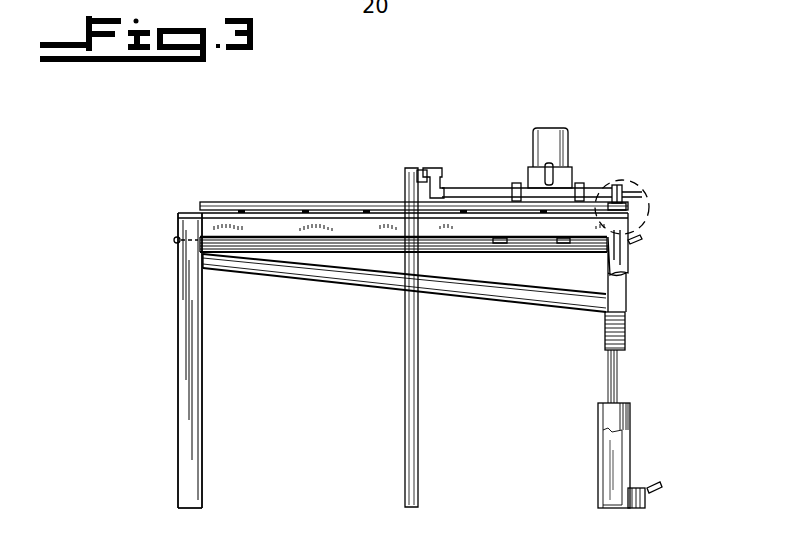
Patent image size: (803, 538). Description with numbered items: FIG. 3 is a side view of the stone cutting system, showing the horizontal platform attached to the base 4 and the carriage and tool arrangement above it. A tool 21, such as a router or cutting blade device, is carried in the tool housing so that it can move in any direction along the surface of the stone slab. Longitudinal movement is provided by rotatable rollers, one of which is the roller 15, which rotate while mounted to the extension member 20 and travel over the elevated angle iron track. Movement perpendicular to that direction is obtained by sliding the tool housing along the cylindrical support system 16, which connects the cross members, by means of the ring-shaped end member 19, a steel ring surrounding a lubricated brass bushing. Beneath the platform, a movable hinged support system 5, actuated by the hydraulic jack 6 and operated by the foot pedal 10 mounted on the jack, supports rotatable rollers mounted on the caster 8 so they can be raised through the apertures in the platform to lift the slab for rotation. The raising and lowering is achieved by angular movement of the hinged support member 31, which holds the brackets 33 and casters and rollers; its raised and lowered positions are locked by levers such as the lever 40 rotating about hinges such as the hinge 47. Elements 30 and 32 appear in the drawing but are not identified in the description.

The base 4 is at (187, 232).
The movable hinged support system 5 is at (622, 323).
The hydraulic jack 6 is at (632, 420).
The caster 8 is at (643, 217).
The foot pedal 10 is at (655, 490).
The rotatable roller 15 is at (430, 170).
The cylindrical support system 16 is at (595, 187).
The ring-shaped end member 19 is at (580, 186).
The extension member 20 is at (527, 192).
The tool 21 is at (568, 130).
The diagonal brace 30 is at (218, 268).
The hinged support member 31 is at (290, 245).
The rail 32 is at (200, 241).
The bracket 33 is at (440, 247).
The lever 40 is at (412, 167).
The hinge 47 is at (417, 182).